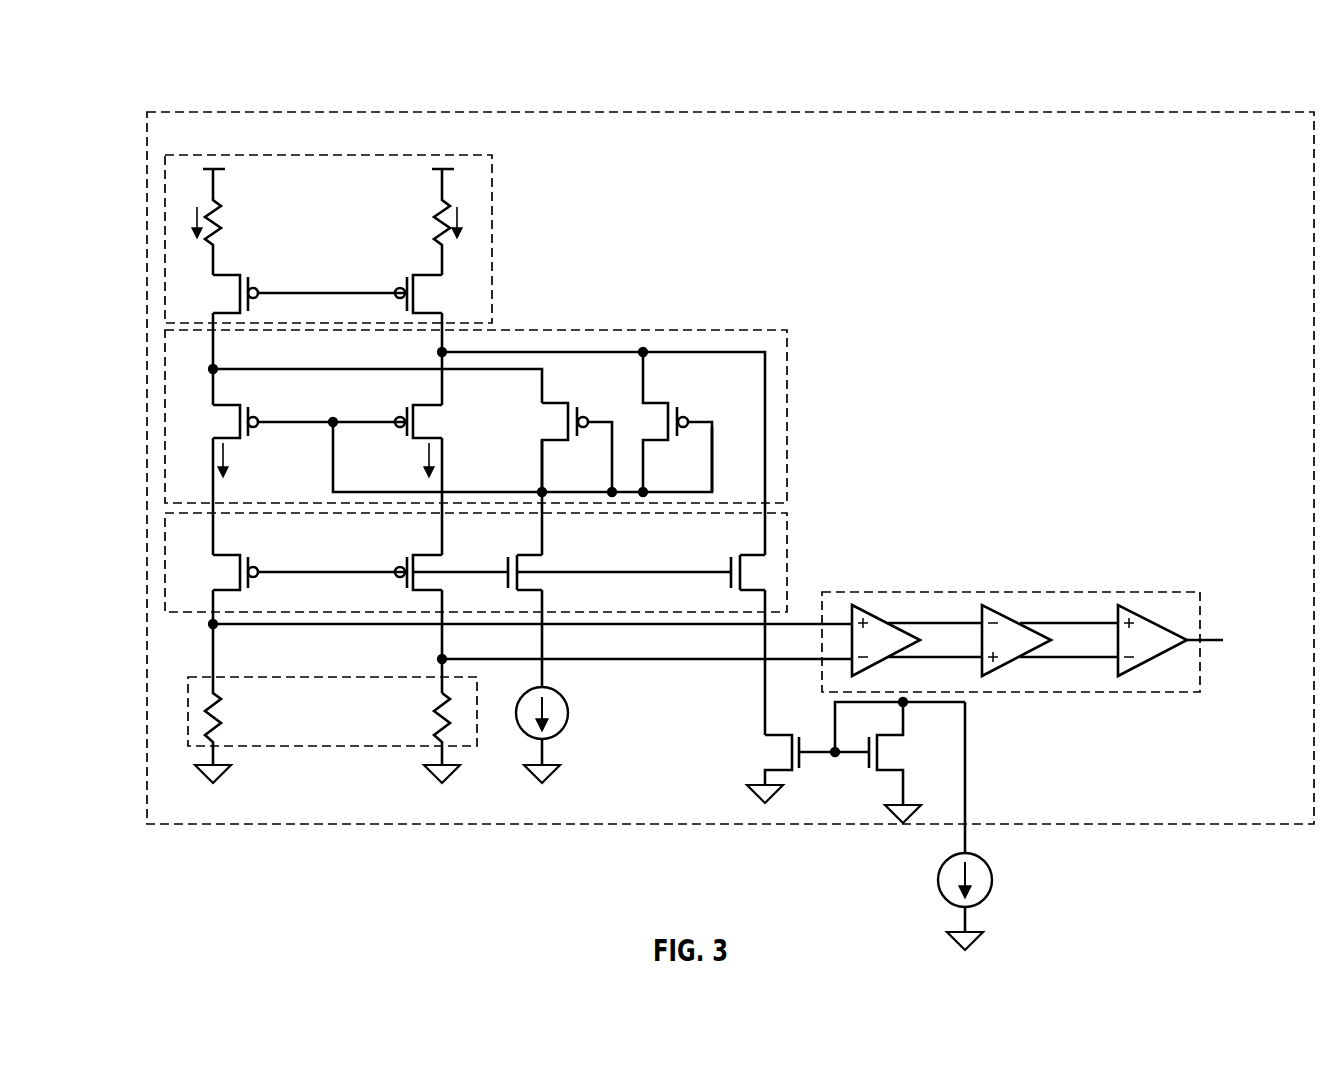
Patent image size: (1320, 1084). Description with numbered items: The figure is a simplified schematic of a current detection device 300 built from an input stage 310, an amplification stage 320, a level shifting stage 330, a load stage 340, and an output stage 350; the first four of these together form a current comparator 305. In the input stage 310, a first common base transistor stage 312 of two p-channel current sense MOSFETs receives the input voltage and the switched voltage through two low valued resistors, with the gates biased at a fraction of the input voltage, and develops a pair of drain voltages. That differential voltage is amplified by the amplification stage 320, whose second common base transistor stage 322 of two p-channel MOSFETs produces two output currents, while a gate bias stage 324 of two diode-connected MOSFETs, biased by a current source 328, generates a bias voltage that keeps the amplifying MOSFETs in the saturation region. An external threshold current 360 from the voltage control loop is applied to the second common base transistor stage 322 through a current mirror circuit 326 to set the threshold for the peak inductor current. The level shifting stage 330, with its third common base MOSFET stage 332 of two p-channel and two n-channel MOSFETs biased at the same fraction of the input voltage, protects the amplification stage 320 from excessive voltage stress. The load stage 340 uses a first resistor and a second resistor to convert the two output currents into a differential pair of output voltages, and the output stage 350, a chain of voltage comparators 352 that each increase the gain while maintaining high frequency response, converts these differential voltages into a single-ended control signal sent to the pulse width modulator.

The current detection device 300 is at (160, 84).
The current comparator 305 is at (683, 221).
The input stage 310 is at (494, 195).
The first common base transistor stage 312 is at (190, 289).
The amplification stage 320 is at (787, 365).
The second common base transistor stage 322 is at (190, 418).
The gate bias stage 324 is at (670, 389).
The current mirror circuit 326 is at (739, 759).
The current source 328 is at (568, 712).
The level shifting stage 330 is at (787, 523).
The third common base MOSFET stage 332 is at (190, 572).
The load stage 340 is at (290, 677).
The output stage 350 is at (1200, 600).
The voltage comparators 352 is at (983, 588).
The threshold current Ithr 360 is at (940, 880).